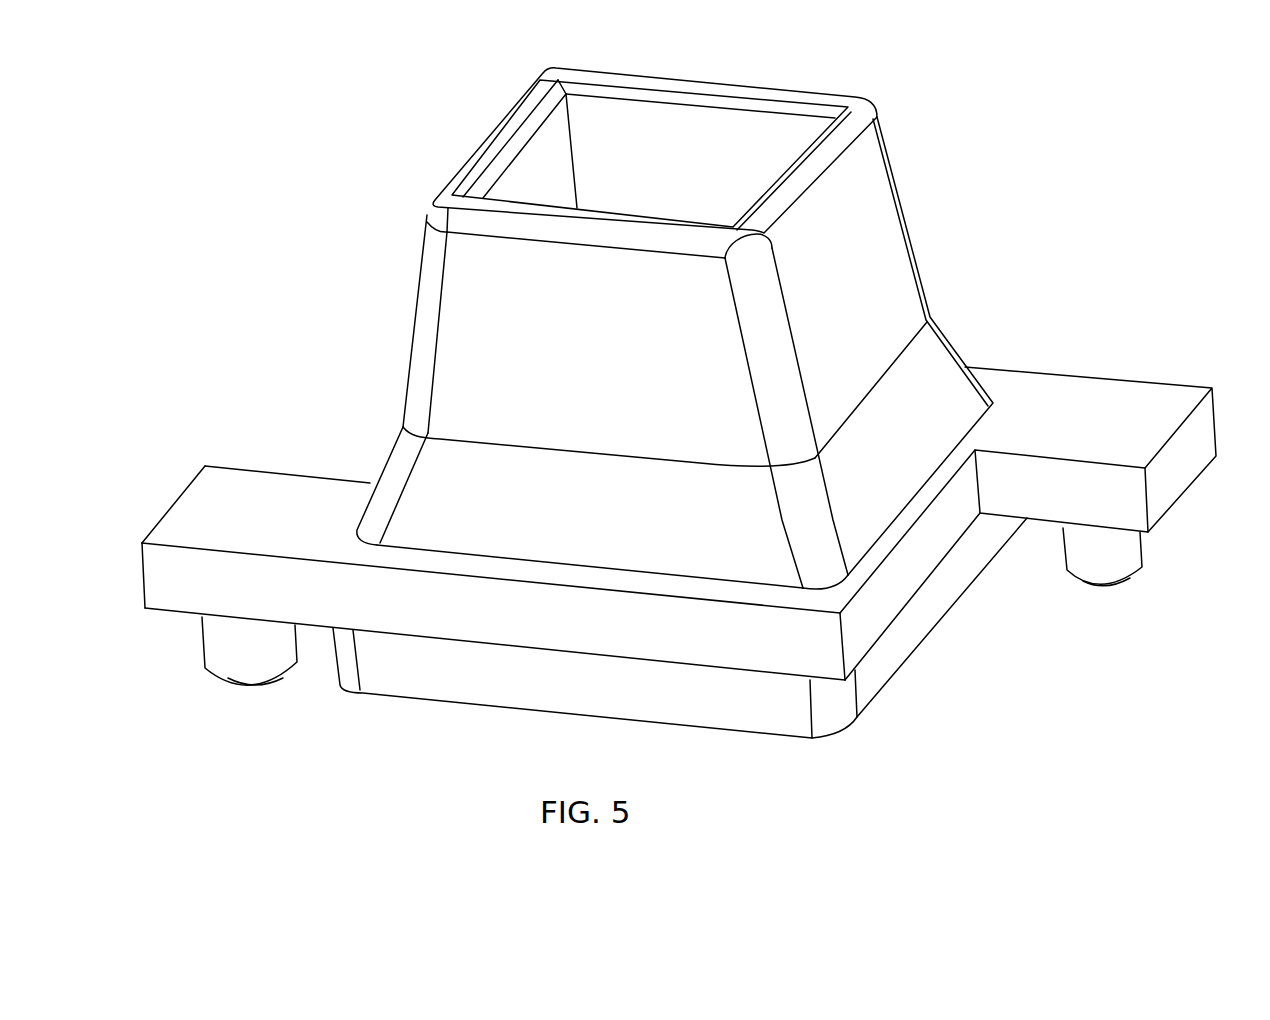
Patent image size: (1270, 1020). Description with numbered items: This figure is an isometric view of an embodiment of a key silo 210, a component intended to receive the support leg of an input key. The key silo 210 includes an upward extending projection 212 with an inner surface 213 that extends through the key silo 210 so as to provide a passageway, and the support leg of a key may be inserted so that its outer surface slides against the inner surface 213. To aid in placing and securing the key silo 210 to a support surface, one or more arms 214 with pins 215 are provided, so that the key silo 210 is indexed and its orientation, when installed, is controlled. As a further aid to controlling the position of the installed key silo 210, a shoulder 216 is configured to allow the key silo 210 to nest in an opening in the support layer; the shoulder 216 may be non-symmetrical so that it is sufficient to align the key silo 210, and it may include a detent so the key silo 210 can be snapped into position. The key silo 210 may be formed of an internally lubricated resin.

The key silo 210 is at (978, 102).
The upward extending projection 212 is at (473, 342).
The inner surface 213 is at (537, 175).
The arms 214 is at (1107, 393).
The pins 215 is at (248, 655).
The shoulder 216 is at (912, 633).